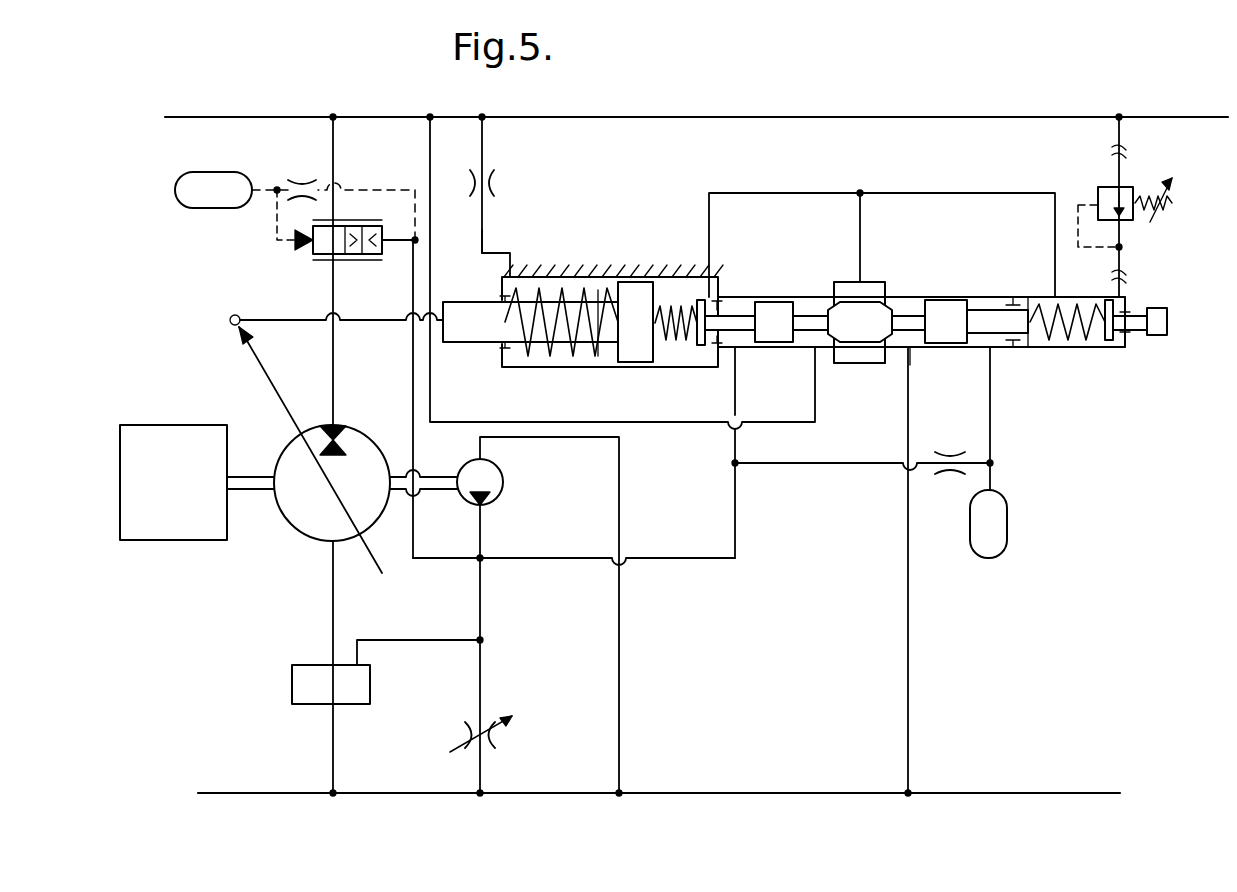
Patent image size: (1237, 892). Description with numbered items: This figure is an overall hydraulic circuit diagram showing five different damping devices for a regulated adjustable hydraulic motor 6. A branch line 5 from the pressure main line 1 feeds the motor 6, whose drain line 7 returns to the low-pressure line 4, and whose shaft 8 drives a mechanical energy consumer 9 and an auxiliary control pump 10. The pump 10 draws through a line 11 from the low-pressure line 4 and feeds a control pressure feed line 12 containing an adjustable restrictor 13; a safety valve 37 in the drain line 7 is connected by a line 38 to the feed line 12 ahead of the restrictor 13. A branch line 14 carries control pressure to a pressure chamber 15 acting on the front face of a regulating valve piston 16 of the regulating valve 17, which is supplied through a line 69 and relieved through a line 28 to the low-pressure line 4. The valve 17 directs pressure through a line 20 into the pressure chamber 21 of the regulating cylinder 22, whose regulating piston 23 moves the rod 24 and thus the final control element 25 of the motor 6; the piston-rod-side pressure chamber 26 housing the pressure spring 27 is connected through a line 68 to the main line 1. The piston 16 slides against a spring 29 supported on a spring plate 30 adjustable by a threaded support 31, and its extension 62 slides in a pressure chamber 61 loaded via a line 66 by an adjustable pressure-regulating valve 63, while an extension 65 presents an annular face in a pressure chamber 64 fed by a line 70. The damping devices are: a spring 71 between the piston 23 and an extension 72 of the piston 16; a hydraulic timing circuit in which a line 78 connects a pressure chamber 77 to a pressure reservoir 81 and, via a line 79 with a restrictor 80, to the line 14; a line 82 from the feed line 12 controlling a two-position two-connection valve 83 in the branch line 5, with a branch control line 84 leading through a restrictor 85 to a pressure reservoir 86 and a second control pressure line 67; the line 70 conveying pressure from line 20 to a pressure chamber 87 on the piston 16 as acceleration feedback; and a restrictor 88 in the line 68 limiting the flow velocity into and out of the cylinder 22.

The pressure main line 1 is at (660, 117).
The low-pressure line 4 is at (762, 793).
The branch line 5 is at (333, 295).
The adjustable hydraulic motor 6 is at (300, 540).
The drain line 7 is at (333, 590).
The shaft 8 is at (258, 477).
The mechanical energy consumer 9 is at (192, 425).
The auxiliary control pump 10 is at (503, 482).
The line 11 is at (619, 668).
The control pressure feed line 12 is at (481, 607).
The adjustable restrictor 13 is at (467, 736).
The branch line 14 is at (680, 558).
The pressure chamber 15 is at (733, 300).
The regulating valve piston 16 is at (858, 310).
The regulating valve 17 is at (870, 363).
The line 20 is at (860, 228).
The pressure chamber 21 is at (700, 276).
The regulating cylinder 22 is at (655, 363).
The regulating piston 23 is at (600, 343).
The rod 24 is at (368, 322).
The final control element 25 is at (268, 380).
The pressure chamber 26 is at (596, 290).
The pressure spring 27 is at (568, 290).
The line 28 is at (910, 668).
The spring 29 is at (1078, 310).
The spring plate 30 is at (1110, 347).
The threaded support 31 is at (1138, 316).
The safety valve 37 is at (292, 686).
The line 38 is at (410, 640).
The pressure chamber 61 is at (1128, 340).
The extension 62 is at (1072, 347).
The pressure-regulating valve 63 is at (1098, 198).
The pressure chamber 64 is at (1026, 347).
The extension 65 is at (966, 320).
The line 66 is at (1122, 256).
The control pressure line 67 is at (270, 218).
The line 68 is at (482, 238).
The line 69 is at (432, 272).
The line 70 is at (936, 193).
The spring 71 is at (678, 310).
The extension 72 is at (700, 348).
The pressure chamber 77 is at (970, 347).
The line 78 is at (992, 422).
The line 79 is at (820, 465).
The restrictor 80 is at (948, 474).
The pressure reservoir 81 is at (1007, 522).
The line 82 is at (456, 560).
The 2/2 valve 83 is at (318, 262).
The branch control line 84 is at (388, 183).
The restrictor 85 is at (296, 184).
The pressure reservoir 86 is at (175, 208).
The pressure chamber 87 is at (1032, 298).
The restrictor 88 is at (494, 183).